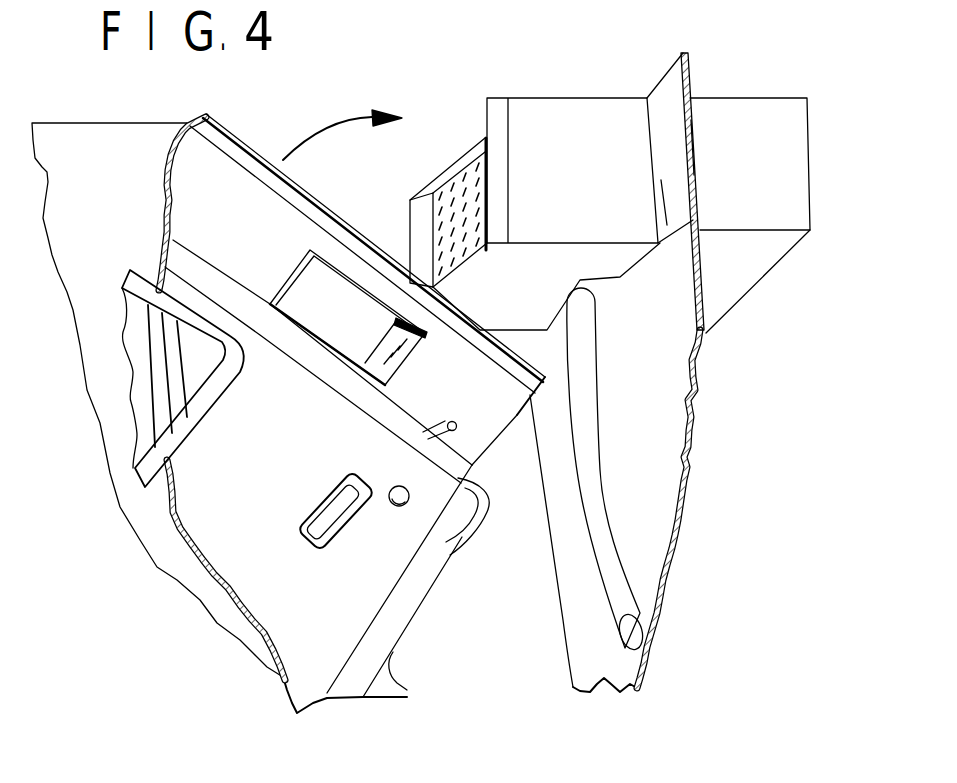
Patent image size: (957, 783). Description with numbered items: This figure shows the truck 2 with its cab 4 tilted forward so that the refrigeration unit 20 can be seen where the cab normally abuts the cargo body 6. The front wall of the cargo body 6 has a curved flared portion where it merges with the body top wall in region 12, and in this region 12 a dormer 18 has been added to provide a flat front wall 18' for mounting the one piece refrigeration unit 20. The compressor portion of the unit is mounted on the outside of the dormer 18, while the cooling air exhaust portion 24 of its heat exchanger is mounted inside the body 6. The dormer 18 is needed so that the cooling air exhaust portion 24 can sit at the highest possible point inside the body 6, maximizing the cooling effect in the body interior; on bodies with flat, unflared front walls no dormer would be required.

The truck 2 is at (742, 373).
The cab 4 is at (160, 517).
The cargo body 6 is at (653, 318).
The region 12 is at (690, 70).
The dormer 18 is at (741, 115).
The flat front wall 18' is at (714, 186).
The refrigeration unit 20 is at (597, 18).
The cooling air exhaust portion 24 is at (783, 208).